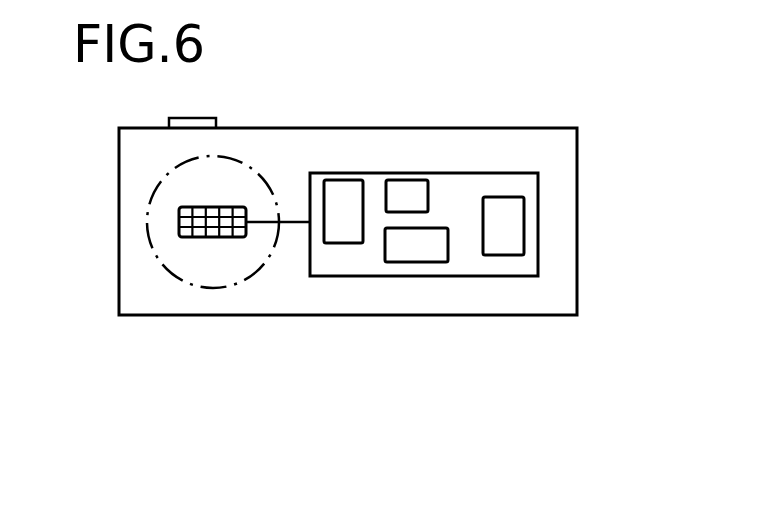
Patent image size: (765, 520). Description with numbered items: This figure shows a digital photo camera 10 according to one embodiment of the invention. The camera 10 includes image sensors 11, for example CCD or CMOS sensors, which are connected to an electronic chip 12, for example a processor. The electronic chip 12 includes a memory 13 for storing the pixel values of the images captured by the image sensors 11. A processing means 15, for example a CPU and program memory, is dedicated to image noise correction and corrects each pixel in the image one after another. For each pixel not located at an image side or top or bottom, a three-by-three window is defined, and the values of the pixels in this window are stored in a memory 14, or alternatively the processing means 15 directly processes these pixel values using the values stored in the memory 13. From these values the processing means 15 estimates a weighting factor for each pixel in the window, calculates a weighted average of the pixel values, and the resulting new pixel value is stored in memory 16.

The camera 10 is at (493, 128).
The image sensors 11 is at (182, 220).
The electronic chip 12 is at (493, 276).
The memory 13 is at (340, 180).
The memory 14 is at (408, 180).
The processing means 15 is at (405, 262).
The memory 16 is at (524, 222).